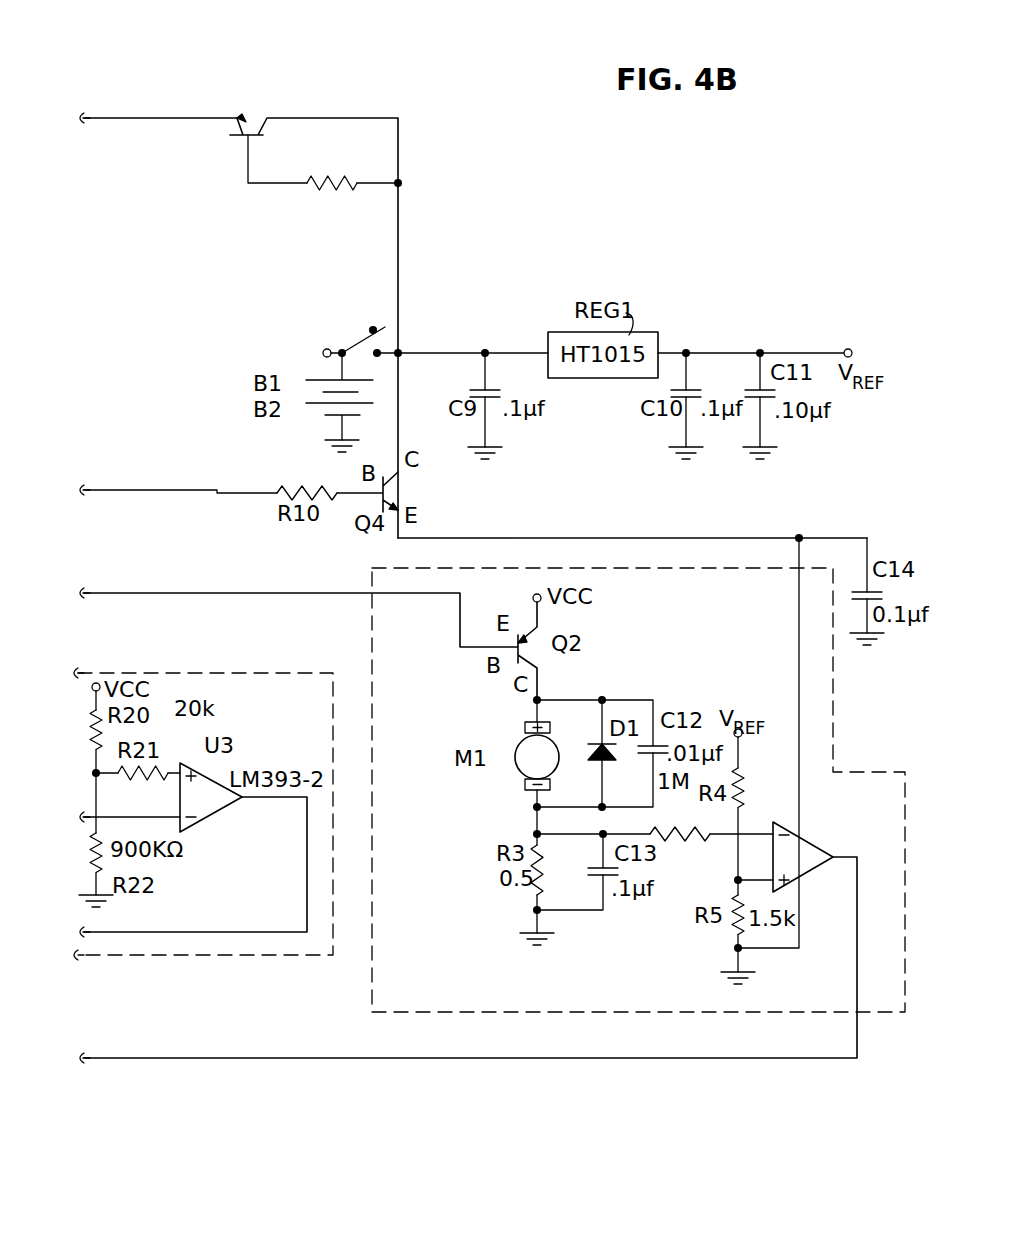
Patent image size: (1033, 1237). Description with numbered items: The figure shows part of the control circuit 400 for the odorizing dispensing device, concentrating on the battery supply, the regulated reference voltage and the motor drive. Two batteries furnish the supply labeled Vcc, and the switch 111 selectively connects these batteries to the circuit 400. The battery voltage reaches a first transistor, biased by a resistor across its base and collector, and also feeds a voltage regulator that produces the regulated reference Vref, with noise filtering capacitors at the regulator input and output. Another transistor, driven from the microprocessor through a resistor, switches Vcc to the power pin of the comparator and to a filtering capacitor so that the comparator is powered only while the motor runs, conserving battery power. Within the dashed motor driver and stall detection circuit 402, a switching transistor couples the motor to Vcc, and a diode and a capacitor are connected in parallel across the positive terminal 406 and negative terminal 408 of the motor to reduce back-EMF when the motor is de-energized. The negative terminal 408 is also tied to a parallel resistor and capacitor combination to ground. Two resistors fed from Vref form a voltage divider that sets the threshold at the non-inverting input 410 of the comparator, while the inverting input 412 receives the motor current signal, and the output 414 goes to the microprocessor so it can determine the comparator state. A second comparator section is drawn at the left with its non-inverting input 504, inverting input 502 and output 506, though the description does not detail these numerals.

The circuit 400 is at (266, 62).
The switch 111 is at (360, 338).
The motor driver and stall detection circuit 402 is at (372, 981).
The positive terminal 406 is at (525, 728).
The negative terminal 408 is at (525, 782).
The non-inverting input 410 is at (782, 876).
The inverting input 412 is at (785, 838).
The output 414 is at (815, 840).
The comparator U3 inverting input 502 is at (204, 818).
The comparator U3 non-inverting input 504 is at (201, 776).
The comparator U3 output 506 is at (242, 797).